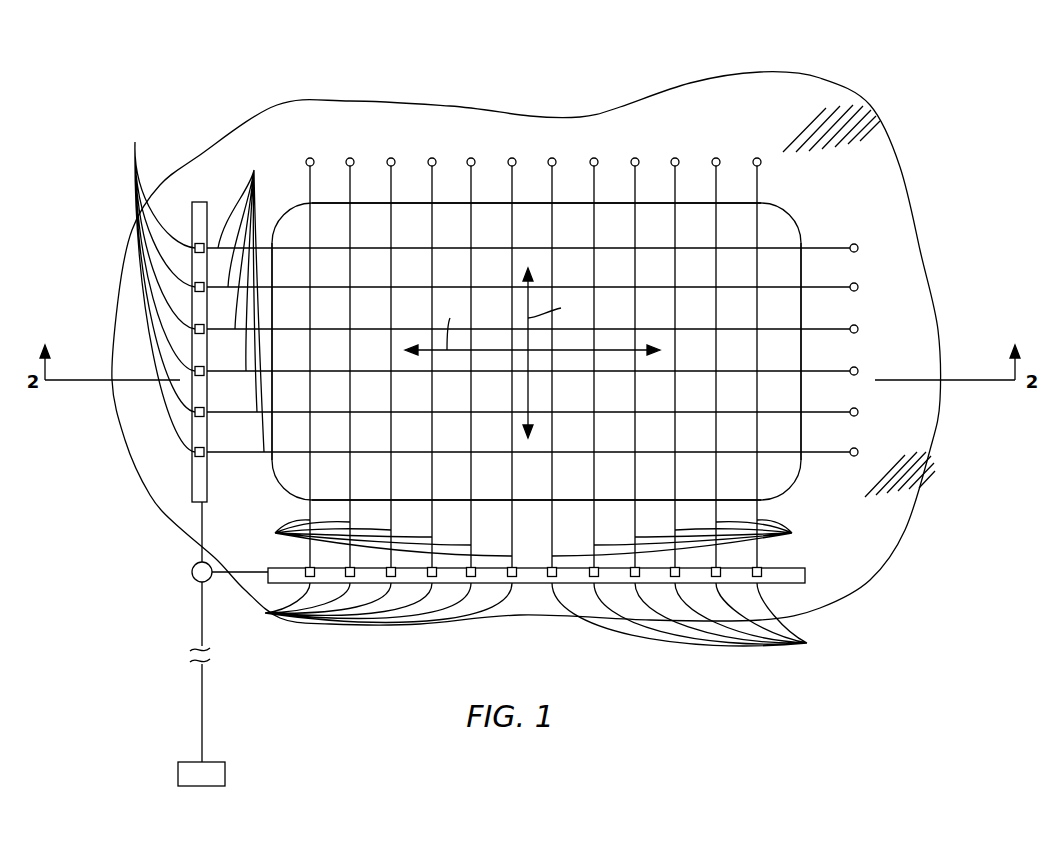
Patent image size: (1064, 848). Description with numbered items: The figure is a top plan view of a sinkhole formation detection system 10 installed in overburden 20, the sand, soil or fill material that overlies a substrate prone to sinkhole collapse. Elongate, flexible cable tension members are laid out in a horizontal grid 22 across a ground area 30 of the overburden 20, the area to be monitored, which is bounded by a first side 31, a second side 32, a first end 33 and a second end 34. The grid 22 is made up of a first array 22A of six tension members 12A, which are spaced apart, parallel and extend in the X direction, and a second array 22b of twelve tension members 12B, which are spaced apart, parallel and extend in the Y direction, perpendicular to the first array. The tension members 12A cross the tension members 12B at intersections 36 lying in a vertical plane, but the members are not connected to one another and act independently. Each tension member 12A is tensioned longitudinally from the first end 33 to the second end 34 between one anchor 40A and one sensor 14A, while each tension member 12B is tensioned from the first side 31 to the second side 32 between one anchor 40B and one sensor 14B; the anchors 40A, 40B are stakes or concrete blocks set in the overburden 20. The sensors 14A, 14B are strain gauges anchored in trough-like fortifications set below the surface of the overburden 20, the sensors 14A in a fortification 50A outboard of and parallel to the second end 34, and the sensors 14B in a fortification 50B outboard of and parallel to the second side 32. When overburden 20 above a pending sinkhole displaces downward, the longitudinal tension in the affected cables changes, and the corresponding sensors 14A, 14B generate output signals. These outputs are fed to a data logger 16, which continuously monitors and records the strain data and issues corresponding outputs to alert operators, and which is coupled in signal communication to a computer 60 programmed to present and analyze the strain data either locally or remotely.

The sinkhole formation detection system 10 is at (757, 94).
The tension members of first array 12A is at (243, 298).
The tension members of second array 12B is at (534, 538).
The sensors 14A is at (154, 283).
The sensors 14B is at (534, 619).
The data logger 16 is at (194, 580).
The overburden 20 is at (855, 135).
The horizontal grid 22 is at (764, 231).
The first array 22A is at (363, 238).
The second array 22b is at (516, 226).
The ground area 30 is at (668, 314).
The first side 31 is at (610, 203).
The second side 32 is at (620, 508).
The first end 33 is at (803, 313).
The second end 34 is at (264, 386).
The intersections 36 is at (393, 287).
The anchors 40A is at (858, 248).
The anchors 40B is at (350, 158).
The fortification 50A is at (197, 202).
The fortification 50B is at (805, 575).
The computer 60 is at (205, 786).